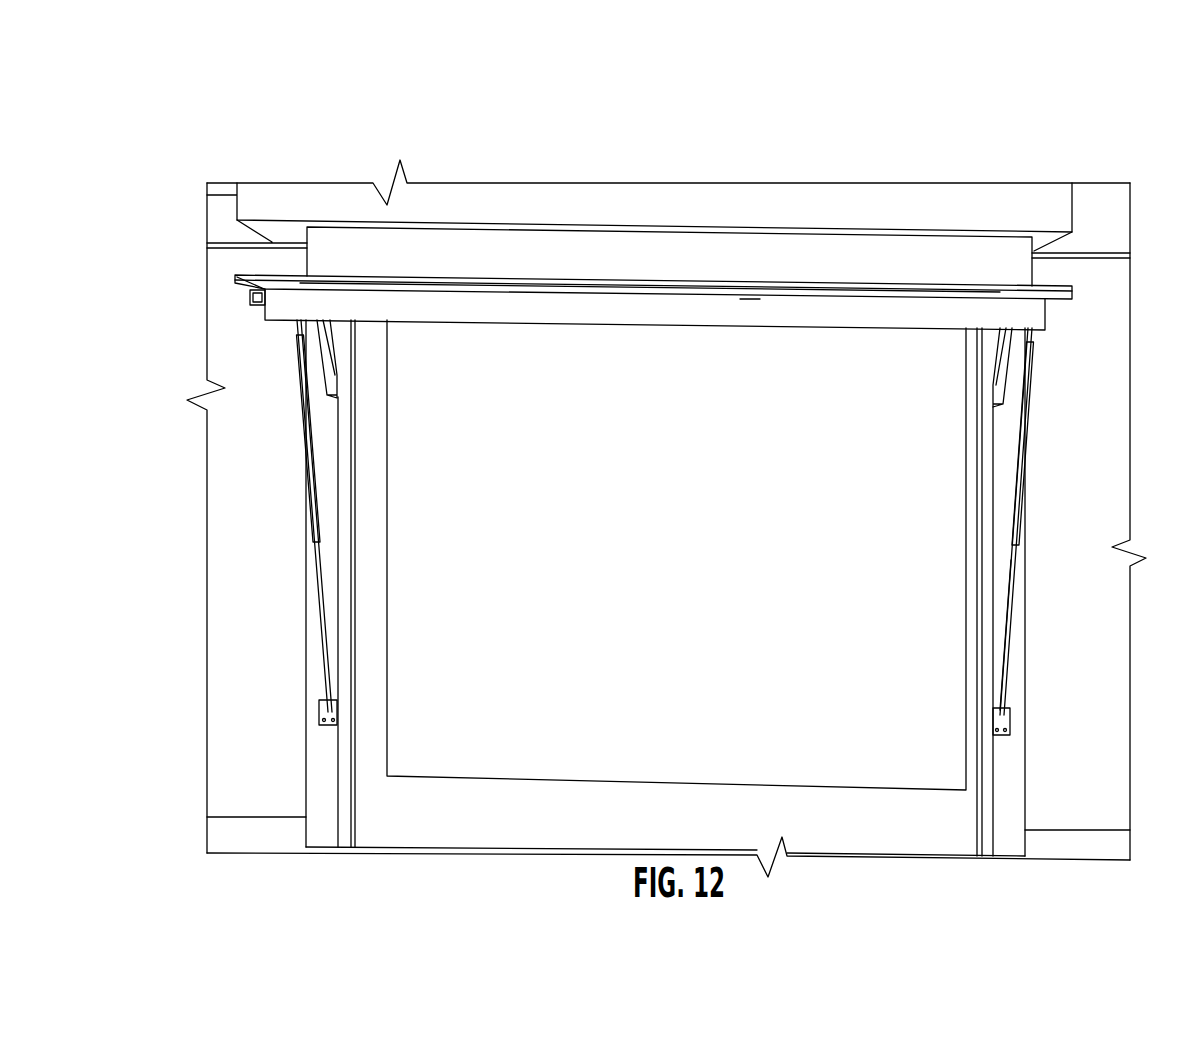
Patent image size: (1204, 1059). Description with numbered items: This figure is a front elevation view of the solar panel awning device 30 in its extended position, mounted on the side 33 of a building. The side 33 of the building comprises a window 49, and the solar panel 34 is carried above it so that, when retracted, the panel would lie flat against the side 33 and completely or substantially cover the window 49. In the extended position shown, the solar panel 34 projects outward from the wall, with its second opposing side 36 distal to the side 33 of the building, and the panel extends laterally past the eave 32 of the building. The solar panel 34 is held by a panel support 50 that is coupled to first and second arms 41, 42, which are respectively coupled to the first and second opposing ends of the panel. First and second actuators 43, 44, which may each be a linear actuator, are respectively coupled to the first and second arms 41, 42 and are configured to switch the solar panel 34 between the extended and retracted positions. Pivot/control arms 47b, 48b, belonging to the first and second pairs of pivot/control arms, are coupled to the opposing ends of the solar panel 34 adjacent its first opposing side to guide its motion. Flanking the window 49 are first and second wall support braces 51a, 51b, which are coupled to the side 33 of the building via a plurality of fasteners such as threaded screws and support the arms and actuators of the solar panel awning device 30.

The solar panel awning device 30 is at (1016, 128).
The eave 32 is at (282, 233).
The side of the building 33 is at (422, 258).
The solar panel 34 is at (752, 280).
The second opposing side 36 is at (662, 297).
The first arm 41 is at (207, 557).
The second arm 42 is at (1033, 395).
The first actuator 43 is at (320, 630).
The second actuator 44 is at (1015, 630).
The pivot/control arm 47b is at (330, 352).
The pivot/control arm 48b is at (1002, 358).
The window 49 is at (843, 768).
The panel support 50 is at (590, 310).
The first wall support brace 51a is at (347, 755).
The second wall support brace 51b is at (987, 777).